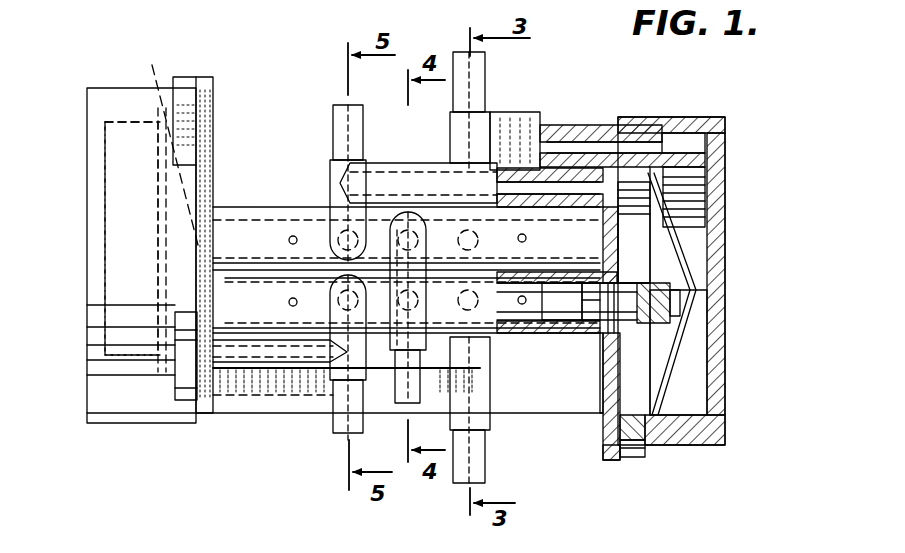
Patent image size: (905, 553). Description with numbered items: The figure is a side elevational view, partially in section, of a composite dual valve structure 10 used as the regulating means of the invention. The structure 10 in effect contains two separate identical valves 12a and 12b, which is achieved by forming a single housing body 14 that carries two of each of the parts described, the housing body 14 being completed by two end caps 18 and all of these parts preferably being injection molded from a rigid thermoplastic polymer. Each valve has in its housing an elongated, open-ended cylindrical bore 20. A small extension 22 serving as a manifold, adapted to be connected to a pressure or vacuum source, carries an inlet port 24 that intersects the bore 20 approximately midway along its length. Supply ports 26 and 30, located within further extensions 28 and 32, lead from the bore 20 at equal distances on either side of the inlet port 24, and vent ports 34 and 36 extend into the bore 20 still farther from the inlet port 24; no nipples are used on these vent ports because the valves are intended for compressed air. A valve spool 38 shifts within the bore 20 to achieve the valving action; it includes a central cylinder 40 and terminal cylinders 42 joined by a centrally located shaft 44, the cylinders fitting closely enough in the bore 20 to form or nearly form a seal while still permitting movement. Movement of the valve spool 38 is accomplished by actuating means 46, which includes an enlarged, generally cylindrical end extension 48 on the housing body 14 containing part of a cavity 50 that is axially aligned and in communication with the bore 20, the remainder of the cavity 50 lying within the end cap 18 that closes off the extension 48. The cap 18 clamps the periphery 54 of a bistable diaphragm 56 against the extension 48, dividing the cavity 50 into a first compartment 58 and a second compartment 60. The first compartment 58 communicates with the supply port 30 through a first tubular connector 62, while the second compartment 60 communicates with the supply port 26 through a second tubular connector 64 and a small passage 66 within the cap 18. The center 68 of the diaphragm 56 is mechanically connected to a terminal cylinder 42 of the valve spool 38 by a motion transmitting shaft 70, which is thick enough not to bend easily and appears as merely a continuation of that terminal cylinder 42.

The dual valve structure 10 is at (578, 70).
The valve 12a is at (78, 247).
The valve 12b is at (735, 218).
The housing body 14 is at (276, 208).
The end cap 18 is at (113, 168).
The bore 20 is at (307, 243).
The extension 22 is at (397, 392).
The inlet port 24 is at (418, 408).
The supply port 26 is at (482, 58).
The extension 28 is at (470, 80).
The supply port 30 is at (356, 103).
The extension 32 is at (343, 122).
The vent port 34 is at (290, 240).
The vent port 36 is at (290, 302).
The valve spool 38 is at (255, 227).
The central cylinder 40 is at (437, 228).
The terminal cylinder 42 is at (270, 358).
The shaft 44 is at (376, 200).
The actuating means 46 is at (218, 88).
The end extension 48 is at (608, 422).
The cavity 50 is at (632, 457).
The periphery 54 is at (152, 65).
The bistable diaphragm 56 is at (216, 152).
The first compartment 58 is at (605, 392).
The second compartment 60 is at (692, 362).
The first tubular connector 62 is at (528, 170).
The second tubular connector 64 is at (590, 125).
The passage 66 is at (700, 158).
The center 68 is at (690, 318).
The motion transmitting shaft 70 is at (634, 232).